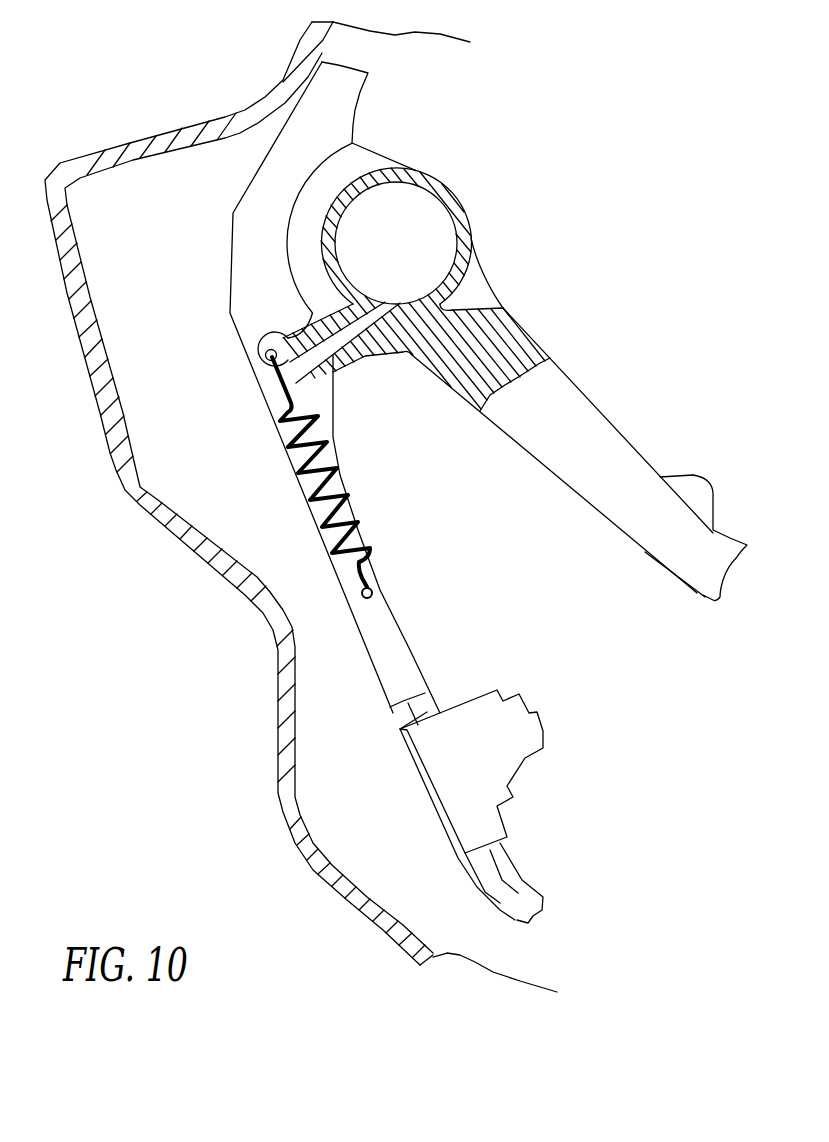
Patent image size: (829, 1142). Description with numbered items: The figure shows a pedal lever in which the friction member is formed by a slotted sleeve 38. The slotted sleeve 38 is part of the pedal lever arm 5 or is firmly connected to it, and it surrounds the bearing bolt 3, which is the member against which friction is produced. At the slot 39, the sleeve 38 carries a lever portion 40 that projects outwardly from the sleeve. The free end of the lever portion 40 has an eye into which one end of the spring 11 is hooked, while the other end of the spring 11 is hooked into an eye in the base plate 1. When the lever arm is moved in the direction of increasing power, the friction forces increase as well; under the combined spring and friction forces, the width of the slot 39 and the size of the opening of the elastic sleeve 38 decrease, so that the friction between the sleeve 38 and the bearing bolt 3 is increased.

The base plate 1 is at (387, 633).
The bearing bolt 3 is at (401, 260).
The pedal lever arm 5 is at (500, 345).
The spring 11 is at (306, 484).
The slotted sleeve 38 is at (417, 175).
The slot 39 is at (342, 332).
The lever portion 40 is at (268, 334).